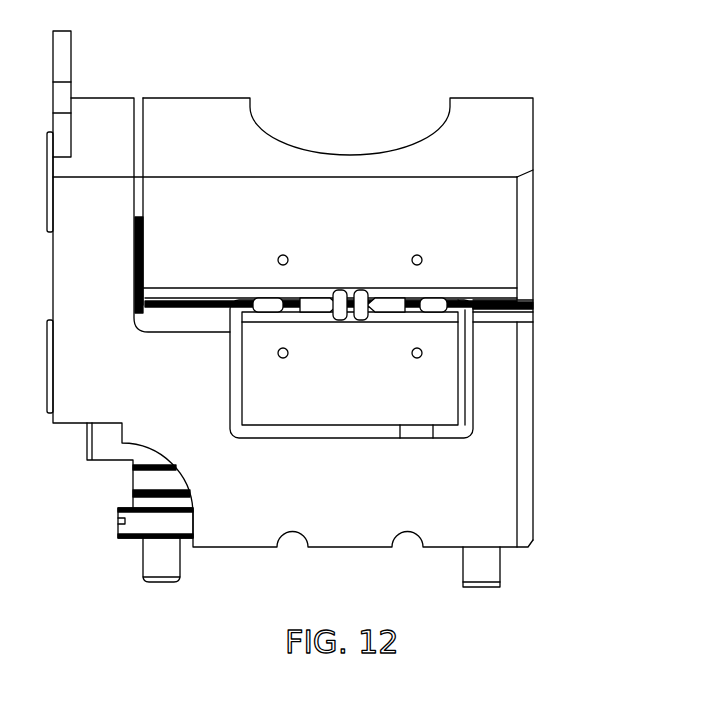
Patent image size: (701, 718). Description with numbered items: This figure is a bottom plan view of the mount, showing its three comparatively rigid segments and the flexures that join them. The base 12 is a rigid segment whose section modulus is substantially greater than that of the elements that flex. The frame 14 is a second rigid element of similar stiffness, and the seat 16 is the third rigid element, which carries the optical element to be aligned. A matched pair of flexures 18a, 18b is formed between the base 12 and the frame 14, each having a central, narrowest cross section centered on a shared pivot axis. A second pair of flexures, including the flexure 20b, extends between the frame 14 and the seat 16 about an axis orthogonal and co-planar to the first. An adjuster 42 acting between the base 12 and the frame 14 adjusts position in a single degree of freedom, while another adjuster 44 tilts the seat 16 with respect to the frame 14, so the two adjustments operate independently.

The base 12 is at (105, 291).
The frame 14 is at (507, 155).
The seat 16 is at (360, 388).
The flexure 18a is at (172, 302).
The flexure 18b is at (522, 302).
The flexure 20b is at (348, 292).
The adjuster 42 is at (152, 589).
The adjuster 44 is at (495, 593).